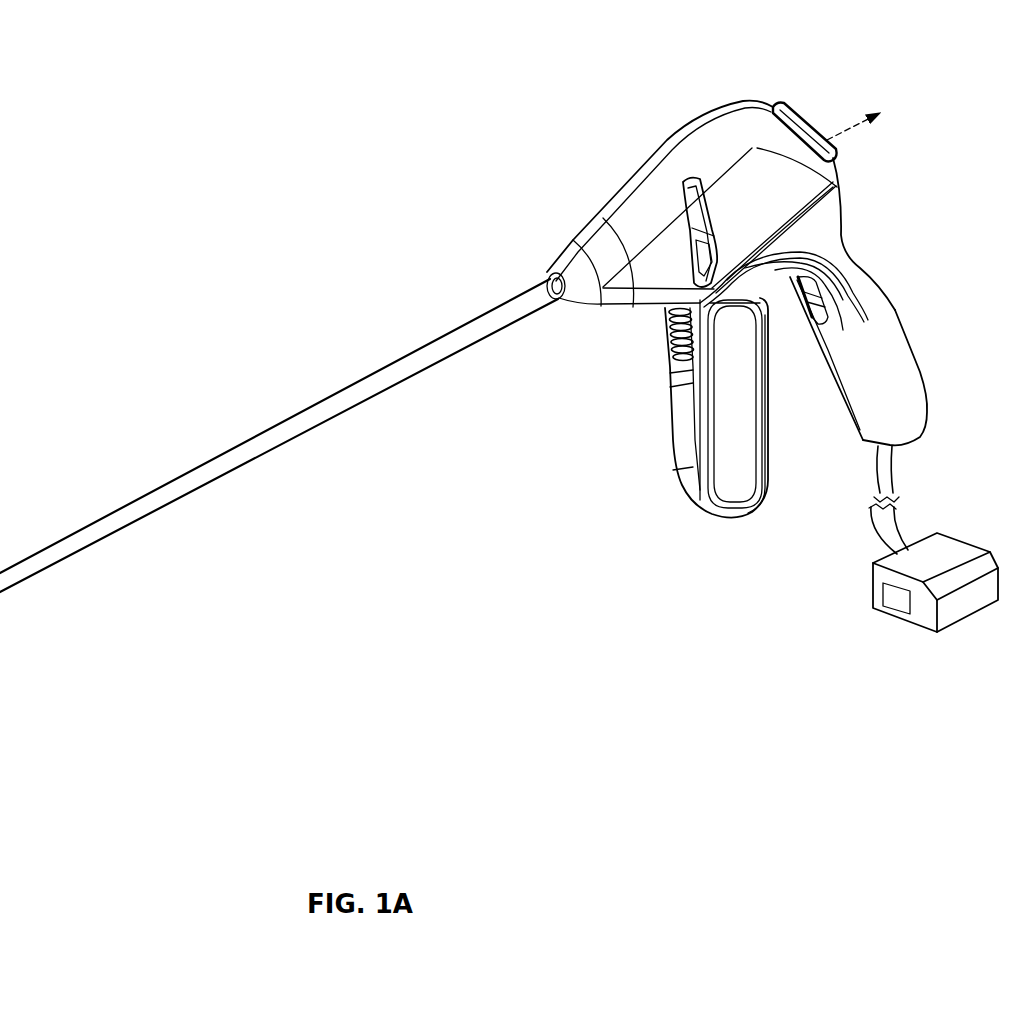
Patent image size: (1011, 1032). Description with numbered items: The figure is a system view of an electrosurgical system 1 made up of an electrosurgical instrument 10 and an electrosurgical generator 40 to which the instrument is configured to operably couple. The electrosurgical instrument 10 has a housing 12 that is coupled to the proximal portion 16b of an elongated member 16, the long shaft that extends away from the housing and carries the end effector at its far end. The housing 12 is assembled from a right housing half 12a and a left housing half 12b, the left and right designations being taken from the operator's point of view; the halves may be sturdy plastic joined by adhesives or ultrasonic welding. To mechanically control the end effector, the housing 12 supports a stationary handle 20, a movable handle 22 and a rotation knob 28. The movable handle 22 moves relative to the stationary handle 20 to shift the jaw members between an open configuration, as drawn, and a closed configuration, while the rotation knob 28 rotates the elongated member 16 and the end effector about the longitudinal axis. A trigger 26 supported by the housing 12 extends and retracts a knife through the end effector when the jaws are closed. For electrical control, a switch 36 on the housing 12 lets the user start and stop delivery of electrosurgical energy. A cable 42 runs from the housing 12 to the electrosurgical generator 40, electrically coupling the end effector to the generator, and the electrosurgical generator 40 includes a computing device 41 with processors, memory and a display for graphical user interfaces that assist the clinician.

The electrosurgical system 1 is at (398, 176).
The electrosurgical instrument 10 is at (218, 359).
The housing 12 is at (770, 71).
The right housing half 12a is at (722, 105).
The left housing half 12b is at (690, 148).
The elongated member 16 is at (139, 495).
The proximal portion of elongated member 16b is at (536, 279).
The stationary handle 20 is at (904, 330).
The movable handle 22 is at (673, 445).
The trigger 26 is at (668, 338).
The rotation knob 28 is at (690, 200).
The switch 36 is at (797, 112).
The electrosurgical generator 40 is at (967, 552).
The computing device 41 is at (897, 600).
The cable 42 is at (888, 480).